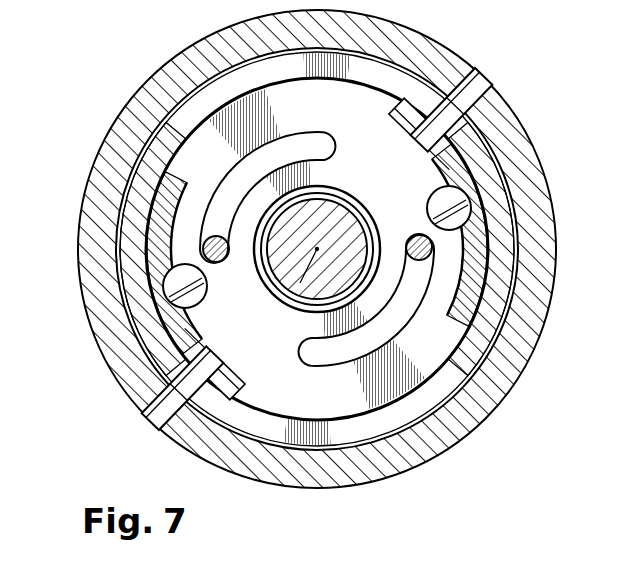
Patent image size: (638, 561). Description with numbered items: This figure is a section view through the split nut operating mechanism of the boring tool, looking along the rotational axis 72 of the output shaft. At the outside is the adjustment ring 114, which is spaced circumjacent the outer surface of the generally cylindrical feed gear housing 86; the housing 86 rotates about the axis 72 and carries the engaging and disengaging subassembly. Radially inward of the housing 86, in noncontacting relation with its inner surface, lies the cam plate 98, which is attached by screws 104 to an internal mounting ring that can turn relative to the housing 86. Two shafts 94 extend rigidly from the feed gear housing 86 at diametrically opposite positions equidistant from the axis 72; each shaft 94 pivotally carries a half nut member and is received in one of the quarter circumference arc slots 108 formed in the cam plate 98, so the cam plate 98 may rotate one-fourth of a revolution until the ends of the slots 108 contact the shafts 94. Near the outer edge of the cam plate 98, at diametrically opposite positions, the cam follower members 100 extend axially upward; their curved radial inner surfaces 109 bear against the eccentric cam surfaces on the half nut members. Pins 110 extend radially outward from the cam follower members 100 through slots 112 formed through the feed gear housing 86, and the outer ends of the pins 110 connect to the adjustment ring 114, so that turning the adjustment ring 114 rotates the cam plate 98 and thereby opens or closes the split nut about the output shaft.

The rotational axis 72 is at (290, 298).
The feed gear housing 86 is at (540, 268).
The shaft 94 is at (221, 262).
The cam plate 98 is at (317, 249).
The cam follower member 100 is at (400, 124).
The screw 104 is at (443, 203).
The quarter circumference arc slot 108 is at (244, 168).
The curved radial inner surface 109 is at (414, 152).
The pin 110 is at (477, 90).
The slot 112 is at (398, 76).
The adjustment ring 114 is at (185, 58).